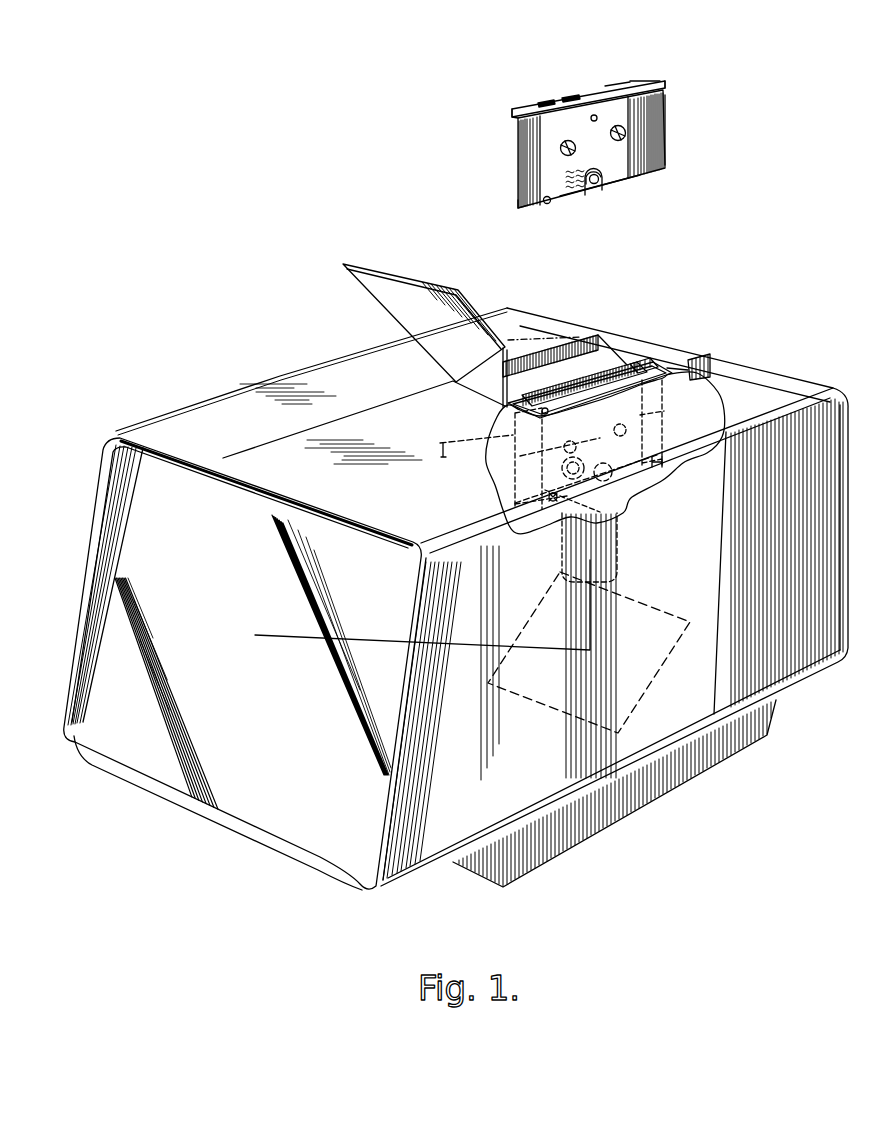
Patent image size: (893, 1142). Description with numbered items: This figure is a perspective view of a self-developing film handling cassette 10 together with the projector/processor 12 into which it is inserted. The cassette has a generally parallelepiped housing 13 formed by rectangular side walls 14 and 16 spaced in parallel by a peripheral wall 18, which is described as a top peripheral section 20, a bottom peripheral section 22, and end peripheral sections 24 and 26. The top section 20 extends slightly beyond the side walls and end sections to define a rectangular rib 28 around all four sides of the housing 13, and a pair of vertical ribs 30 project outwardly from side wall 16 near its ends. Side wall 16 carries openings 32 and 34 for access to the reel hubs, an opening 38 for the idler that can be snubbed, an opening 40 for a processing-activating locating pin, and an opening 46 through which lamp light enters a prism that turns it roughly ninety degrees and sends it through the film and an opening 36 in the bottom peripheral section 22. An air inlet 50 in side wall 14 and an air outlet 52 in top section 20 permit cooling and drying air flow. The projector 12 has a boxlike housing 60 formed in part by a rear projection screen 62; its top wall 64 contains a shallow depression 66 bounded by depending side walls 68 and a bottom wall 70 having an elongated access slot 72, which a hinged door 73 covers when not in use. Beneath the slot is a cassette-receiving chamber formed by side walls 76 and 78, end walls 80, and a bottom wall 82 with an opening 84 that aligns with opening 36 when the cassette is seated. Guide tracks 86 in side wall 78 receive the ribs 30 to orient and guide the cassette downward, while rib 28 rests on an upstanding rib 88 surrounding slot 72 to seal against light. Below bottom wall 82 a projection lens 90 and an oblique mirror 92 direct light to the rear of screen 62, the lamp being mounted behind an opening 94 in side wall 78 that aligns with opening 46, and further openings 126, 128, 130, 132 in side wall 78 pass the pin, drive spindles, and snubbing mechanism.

The self-developing film handling cassette 10 is at (567, 124).
The projector/processor 12 is at (193, 394).
The housing 13 is at (644, 79).
The side wall 14 is at (518, 145).
The side wall 16 is at (643, 160).
The peripheral wall 18 is at (522, 213).
The top peripheral section 20 is at (627, 81).
The bottom peripheral section 22 is at (613, 193).
The end peripheral section 24 is at (523, 132).
The end peripheral section 26 is at (668, 117).
The rib 28 is at (667, 88).
The vertical ribs 30 is at (667, 143).
The opening 32 is at (618, 125).
The opening 34 is at (577, 148).
The opening 36 is at (581, 199).
The opening 38 is at (549, 204).
The opening 40 is at (594, 114).
The opening 46 is at (600, 179).
The air inlet 50 is at (564, 173).
The air outlet 52 is at (567, 97).
The housing 60 is at (313, 367).
The rear projection screen 62 is at (251, 797).
The top wall 64 is at (583, 357).
The depression 66 is at (570, 333).
The depending side walls 68 is at (625, 347).
The bottom wall 70 is at (570, 375).
The access slot 72 is at (553, 380).
The hinged door 73 is at (377, 287).
The side wall 76 is at (642, 362).
The side wall 78 is at (586, 460).
The end walls 80 is at (650, 367).
The bottom wall 82 is at (657, 478).
The opening 84 is at (601, 513).
The guide tracks 86 is at (515, 432).
The upstanding rib 88 is at (656, 412).
The projection lens 90 is at (567, 545).
The mirror 92 is at (640, 623).
The opening 94 is at (628, 488).
The opening 126 is at (549, 412).
The opening 128 is at (650, 432).
The opening 130 is at (508, 463).
The opening 132 is at (535, 537).